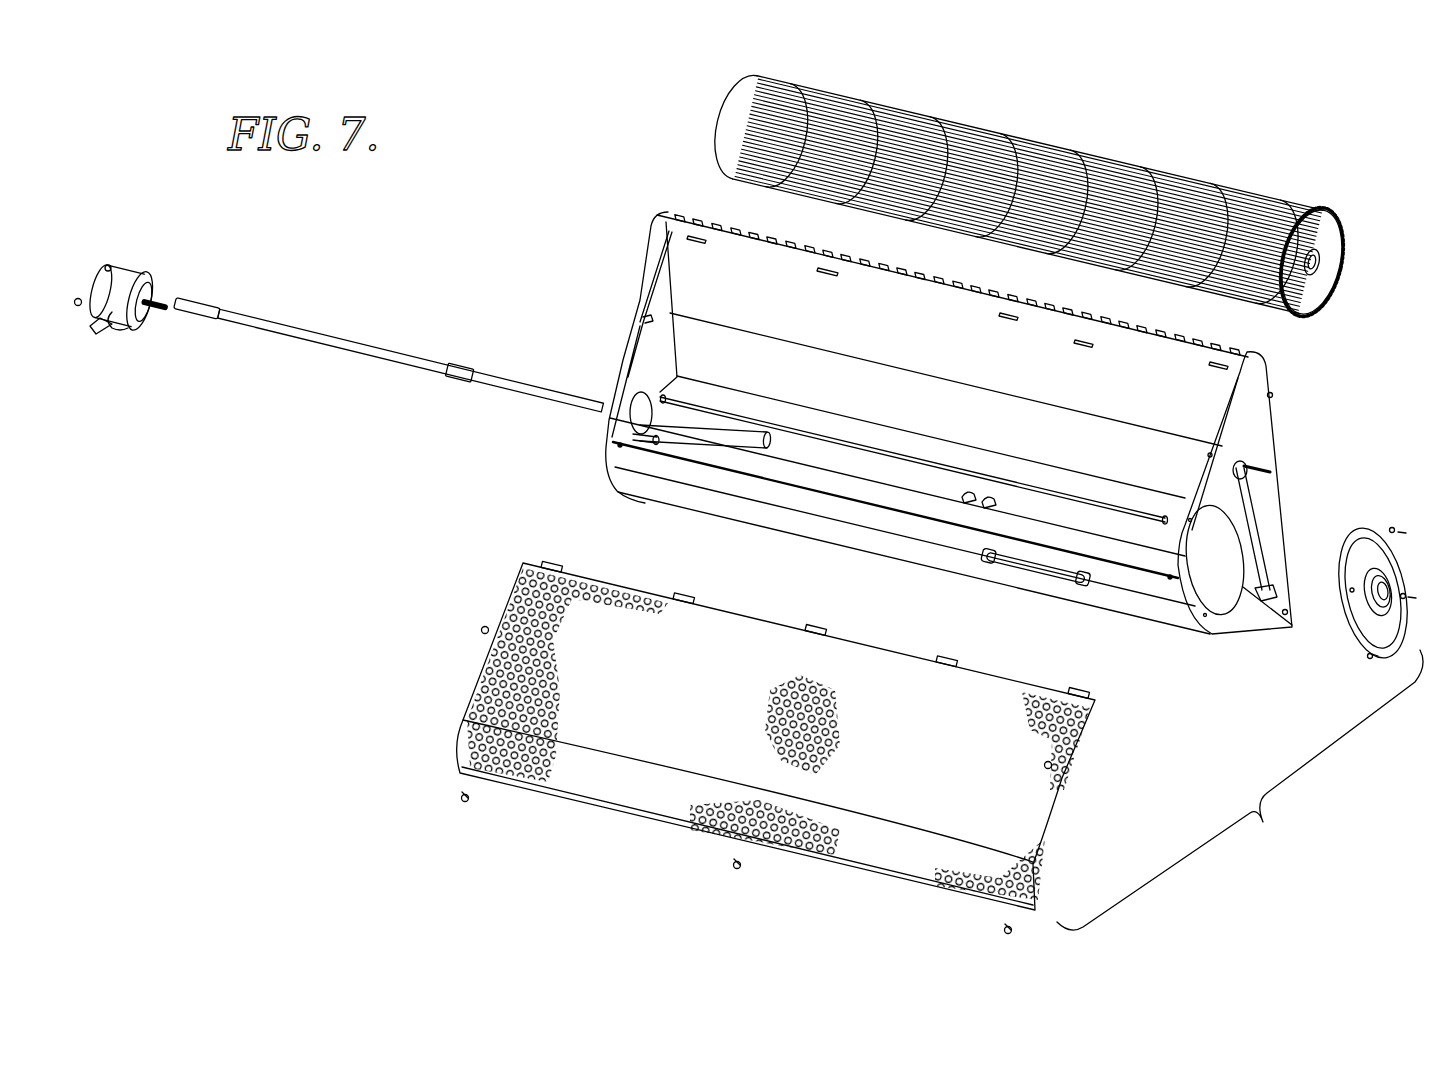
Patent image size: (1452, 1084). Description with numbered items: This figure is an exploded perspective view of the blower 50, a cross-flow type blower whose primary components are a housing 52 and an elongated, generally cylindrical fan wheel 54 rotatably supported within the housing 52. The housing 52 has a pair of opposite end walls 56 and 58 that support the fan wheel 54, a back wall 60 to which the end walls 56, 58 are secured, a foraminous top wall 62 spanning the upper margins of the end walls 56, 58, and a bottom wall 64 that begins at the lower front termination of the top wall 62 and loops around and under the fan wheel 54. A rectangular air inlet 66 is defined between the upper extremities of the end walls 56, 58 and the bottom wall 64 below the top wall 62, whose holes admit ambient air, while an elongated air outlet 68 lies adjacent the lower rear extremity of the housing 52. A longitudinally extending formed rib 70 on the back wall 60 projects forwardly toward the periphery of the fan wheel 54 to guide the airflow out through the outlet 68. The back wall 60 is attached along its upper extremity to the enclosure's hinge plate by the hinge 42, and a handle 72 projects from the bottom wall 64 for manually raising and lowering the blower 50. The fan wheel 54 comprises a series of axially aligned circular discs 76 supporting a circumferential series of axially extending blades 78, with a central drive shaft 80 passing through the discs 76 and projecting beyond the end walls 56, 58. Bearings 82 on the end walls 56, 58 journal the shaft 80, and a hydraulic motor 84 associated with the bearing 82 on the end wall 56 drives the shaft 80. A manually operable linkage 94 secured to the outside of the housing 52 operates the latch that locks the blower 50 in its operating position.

The hinge 42 is at (722, 222).
The blower 50 is at (548, 268).
The housing 52 is at (1267, 433).
The fan wheel 54 is at (714, 106).
The end wall 56 is at (641, 369).
The end wall 58 is at (1213, 621).
The back wall 60 is at (1197, 363).
The foraminous top wall 62 is at (706, 633).
The bottom wall 64 is at (845, 523).
The air inlet 66 is at (1213, 428).
The air outlet 68 is at (918, 472).
The formed rib 70 is at (1000, 465).
The handle 72 is at (1035, 582).
The circular discs 76 is at (1325, 250).
The blades 78 is at (1228, 187).
The central drive shaft 80 is at (355, 348).
The bearings 82 is at (160, 275).
The hydraulic motor 84 is at (128, 266).
The manually operable linkage 94 is at (1245, 512).